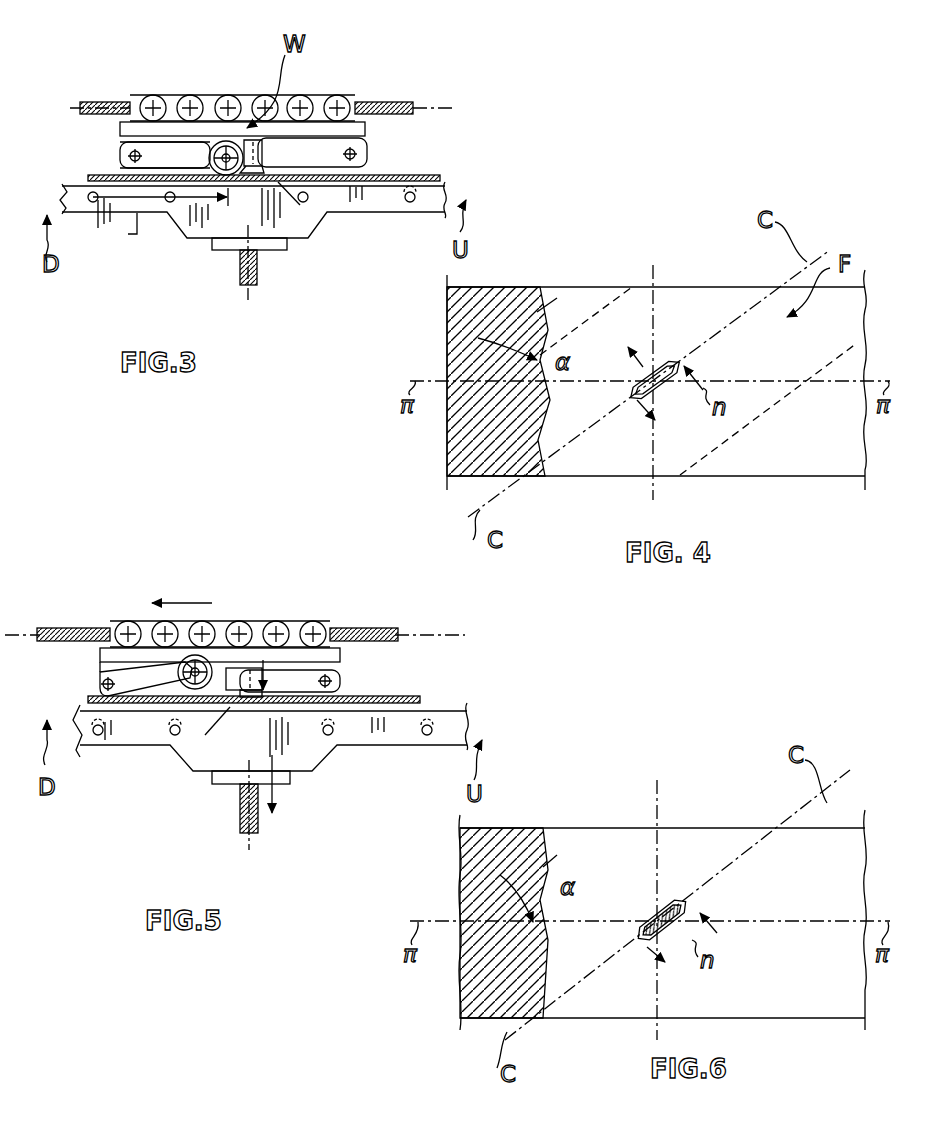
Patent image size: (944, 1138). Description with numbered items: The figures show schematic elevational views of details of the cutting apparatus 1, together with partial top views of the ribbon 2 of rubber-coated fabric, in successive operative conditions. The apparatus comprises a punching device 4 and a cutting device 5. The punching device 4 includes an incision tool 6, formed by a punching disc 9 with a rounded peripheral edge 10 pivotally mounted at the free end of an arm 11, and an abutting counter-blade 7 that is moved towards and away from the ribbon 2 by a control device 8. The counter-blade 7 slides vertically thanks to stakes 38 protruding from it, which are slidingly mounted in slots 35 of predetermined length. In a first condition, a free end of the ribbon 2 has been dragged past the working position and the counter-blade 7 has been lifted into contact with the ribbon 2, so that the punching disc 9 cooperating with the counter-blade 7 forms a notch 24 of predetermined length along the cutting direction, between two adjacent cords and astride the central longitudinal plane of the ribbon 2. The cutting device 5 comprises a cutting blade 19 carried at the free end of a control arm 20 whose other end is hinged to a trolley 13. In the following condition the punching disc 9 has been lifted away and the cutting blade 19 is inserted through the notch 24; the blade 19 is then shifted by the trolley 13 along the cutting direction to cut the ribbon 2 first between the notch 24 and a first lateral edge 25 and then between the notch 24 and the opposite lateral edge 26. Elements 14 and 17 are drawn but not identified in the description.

In FIG. 3, the cutting apparatus 1 is at (130, 262).
In FIG. 5, the cutting apparatus 1 is at (122, 813).
In FIG. 3, the ribbon 2 is at (398, 168).
In FIG. 4, the ribbon 2 is at (782, 482).
In FIG. 5, the ribbon 2 is at (410, 695).
In FIG. 6, the ribbon 2 is at (800, 1020).
In FIG. 3, the punching device 4 is at (203, 150).
In FIG. 5, the punching device 4 is at (150, 672).
In FIG. 3, the cutting device 5 is at (295, 142).
In FIG. 5, the cutting device 5 is at (240, 672).
In FIG. 3, the incision tool 6 is at (245, 130).
In FIG. 5, the incision tool 6 is at (205, 657).
In FIG. 3, the abutting counter-blade 7 is at (347, 200).
In FIG. 5, the abutting counter-blade 7 is at (362, 735).
In FIG. 3, the control device 8 is at (263, 263).
In FIG. 5, the control device 8 is at (263, 830).
In FIG. 3, the punching disc 9 is at (233, 165).
In FIG. 5, the punching disc 9 is at (195, 658).
In FIG. 3, the rounded peripheral edge 10 is at (230, 205).
In FIG. 5, the rounded peripheral edge 10 is at (167, 705).
In FIG. 3, the arm 11 is at (165, 158).
In FIG. 5, the arm 11 is at (108, 668).
In FIG. 3, the trolley 13 is at (367, 124).
In FIG. 5, the trolley 13 is at (343, 648).
In FIG. 3, the mounting bracket 14 is at (172, 157).
In FIG. 5, the mounting bracket 14 is at (296, 690).
In FIG. 3, the chain guide 17 is at (380, 103).
In FIG. 5, the chain guide 17 is at (383, 630).
In FIG. 3, the cutting blade 19 is at (300, 205).
In FIG. 5, the cutting blade 19 is at (205, 735).
In FIG. 6, the cutting blade 19 is at (670, 900).
In FIG. 3, the control arm 20 is at (318, 150).
In FIG. 5, the control arm 20 is at (340, 672).
In FIG. 4, the notch 24 is at (668, 360).
In FIG. 6, the notch 24 is at (652, 912).
In FIG. 4, the first lateral edge 25 is at (592, 478).
In FIG. 6, the first lateral edge 25 is at (597, 1018).
In FIG. 4, the opposite lateral edge 26 is at (577, 286).
In FIG. 6, the opposite lateral edge 26 is at (563, 827).
In FIG. 3, the slots 35 is at (410, 204).
In FIG. 5, the slots 35 is at (428, 720).
In FIG. 3, the stakes 38 is at (412, 194).
In FIG. 5, the stakes 38 is at (426, 745).